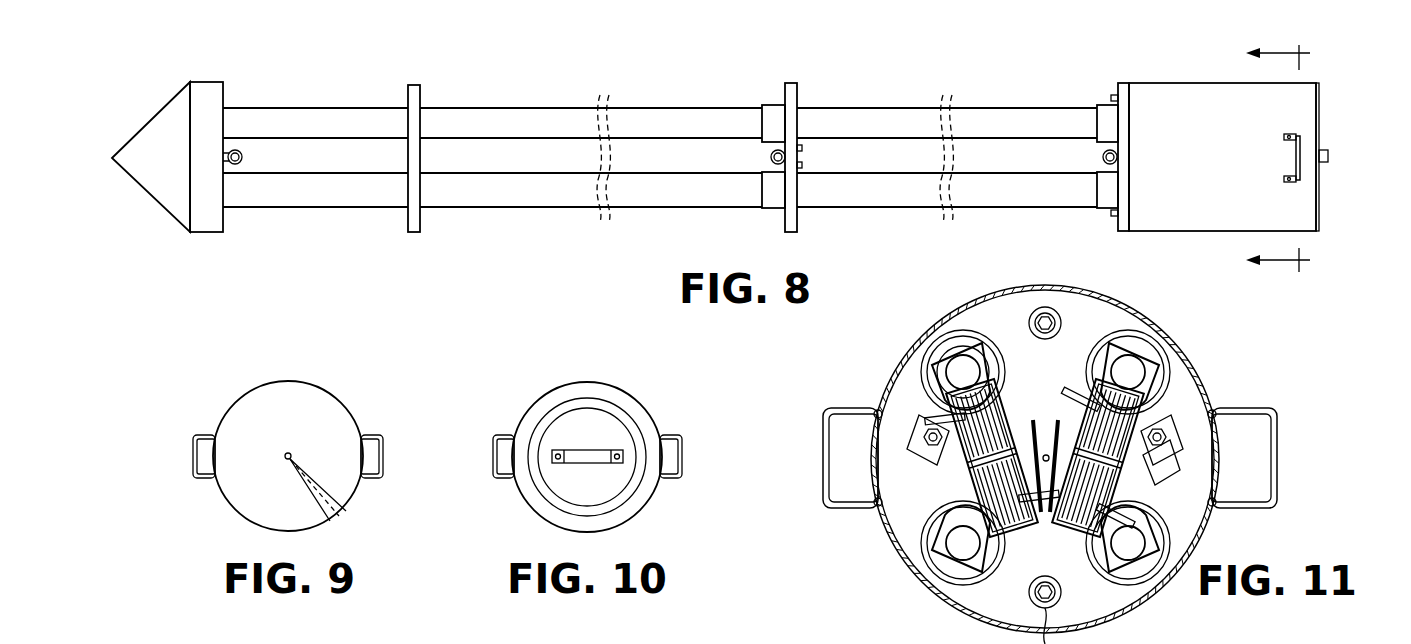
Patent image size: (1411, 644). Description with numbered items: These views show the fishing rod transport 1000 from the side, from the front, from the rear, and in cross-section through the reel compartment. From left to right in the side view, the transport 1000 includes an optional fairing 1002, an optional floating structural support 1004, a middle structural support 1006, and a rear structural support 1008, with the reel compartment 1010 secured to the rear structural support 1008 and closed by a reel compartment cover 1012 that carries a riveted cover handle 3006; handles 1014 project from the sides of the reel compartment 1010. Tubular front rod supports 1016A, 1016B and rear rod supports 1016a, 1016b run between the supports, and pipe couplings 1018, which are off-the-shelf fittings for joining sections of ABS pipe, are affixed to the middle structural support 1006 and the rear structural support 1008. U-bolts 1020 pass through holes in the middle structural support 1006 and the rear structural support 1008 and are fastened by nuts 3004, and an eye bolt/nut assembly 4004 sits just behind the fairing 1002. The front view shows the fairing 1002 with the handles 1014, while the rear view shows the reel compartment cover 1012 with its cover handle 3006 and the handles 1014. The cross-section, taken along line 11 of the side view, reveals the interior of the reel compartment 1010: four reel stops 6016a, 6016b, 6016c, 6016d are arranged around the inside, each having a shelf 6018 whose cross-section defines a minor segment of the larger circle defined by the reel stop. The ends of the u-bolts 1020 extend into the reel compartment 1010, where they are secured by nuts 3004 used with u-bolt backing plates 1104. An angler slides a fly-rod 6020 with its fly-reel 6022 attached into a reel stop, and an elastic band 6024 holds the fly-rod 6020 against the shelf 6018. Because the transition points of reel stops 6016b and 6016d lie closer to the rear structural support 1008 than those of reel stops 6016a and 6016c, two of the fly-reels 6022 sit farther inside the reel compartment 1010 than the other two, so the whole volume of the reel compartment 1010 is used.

In FIG. 8, the transport 1000 is at (679, 78).
In FIG. 9, the transport 1000 is at (231, 381).
In FIG. 10, the transport 1000 is at (531, 381).
In FIG. 11, the transport 1000 is at (890, 574).
In FIG. 8, the fairing 1002 is at (148, 120).
In FIG. 9, the fairing 1002 is at (288, 381).
In FIG. 8, the floating structural support 1004 is at (413, 85).
In FIG. 8, the middle structural support 1006 is at (790, 83).
In FIG. 8, the rear structural support 1008 is at (1122, 83).
In FIG. 8, the reel compartment 1010 is at (1215, 83).
In FIG. 11, the reel compartment 1010 is at (1007, 628).
In FIG. 8, the reel compartment cover 1012 is at (1320, 105).
In FIG. 10, the reel compartment cover 1012 is at (588, 382).
In FIG. 8, the handles 1014 is at (1294, 157).
In FIG. 9, the handles 1014 is at (193, 456).
In FIG. 10, the handles 1014 is at (683, 456).
In FIG. 11, the handles 1014 is at (1270, 404).
In FIG. 8, the front rod support 1016A is at (317, 208).
In FIG. 8, the front rod support 1016B is at (317, 107).
In FIG. 8, the rear rod support 1016a is at (868, 208).
In FIG. 8, the rear rod support 1016b is at (868, 107).
In FIG. 8, the pipe couplings 1018 is at (770, 118).
In FIG. 8, the u-bolts 1020 is at (771, 157).
In FIG. 11, the nuts 3004 is at (1170, 437).
In FIG. 8, the cover handle 3006 is at (1330, 157).
In FIG. 10, the cover handle 3006 is at (610, 450).
In FIG. 8, the eye bolt/nut assembly 4004 is at (250, 157).
In FIG. 11, the u-bolt backing plates 1104 is at (1150, 462).
In FIG. 11, the reel stop 6016a is at (938, 526).
In FIG. 11, the reel stop 6016b is at (935, 390).
In FIG. 11, the reel stop 6016c is at (1158, 388).
In FIG. 11, the reel stop 6016d is at (1158, 528).
In FIG. 11, the shelf 6018 is at (965, 352).
In FIG. 11, the fly-rod 6020 is at (963, 370).
In FIG. 11, the fly-reel 6022 is at (1056, 420).
In FIG. 11, the elastic band 6024 is at (1118, 345).
In FIG. 8, the line 11 is at (1291, 157).